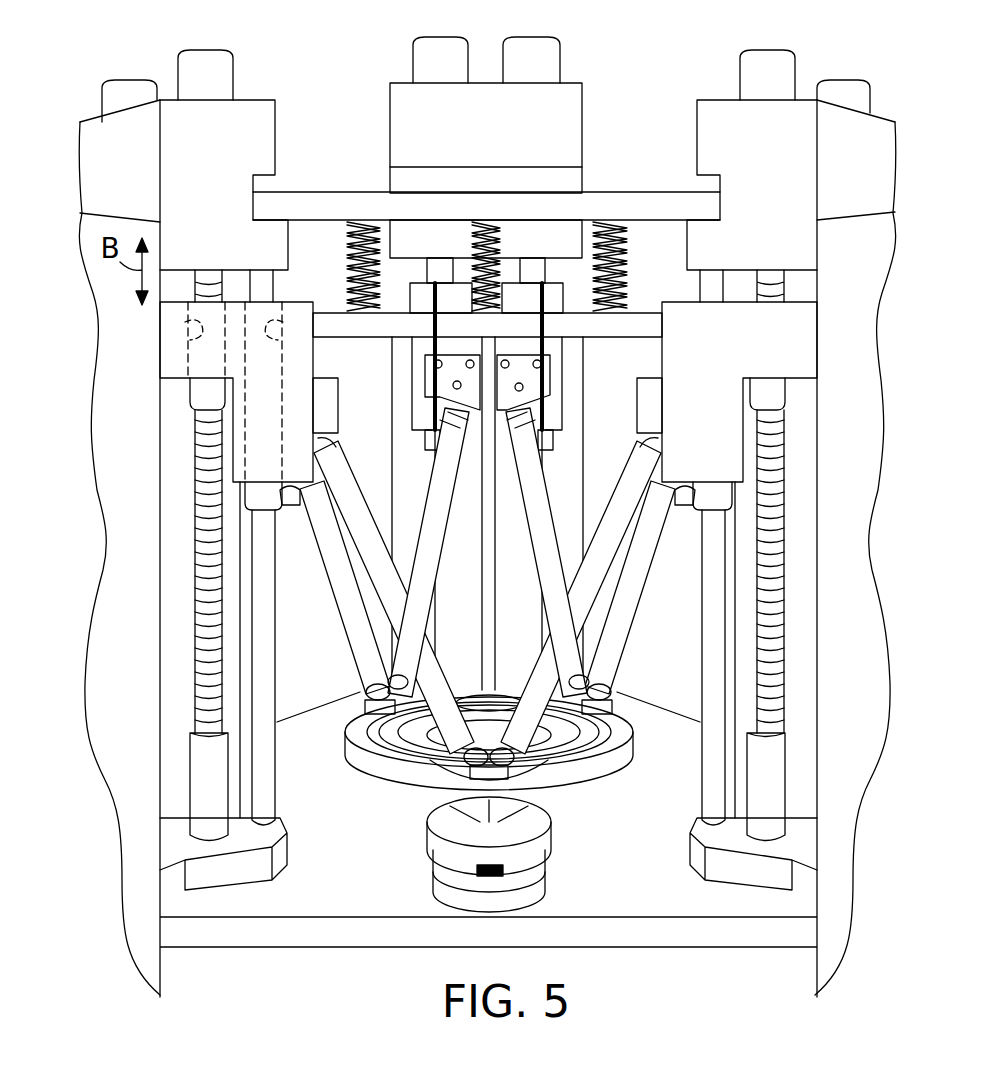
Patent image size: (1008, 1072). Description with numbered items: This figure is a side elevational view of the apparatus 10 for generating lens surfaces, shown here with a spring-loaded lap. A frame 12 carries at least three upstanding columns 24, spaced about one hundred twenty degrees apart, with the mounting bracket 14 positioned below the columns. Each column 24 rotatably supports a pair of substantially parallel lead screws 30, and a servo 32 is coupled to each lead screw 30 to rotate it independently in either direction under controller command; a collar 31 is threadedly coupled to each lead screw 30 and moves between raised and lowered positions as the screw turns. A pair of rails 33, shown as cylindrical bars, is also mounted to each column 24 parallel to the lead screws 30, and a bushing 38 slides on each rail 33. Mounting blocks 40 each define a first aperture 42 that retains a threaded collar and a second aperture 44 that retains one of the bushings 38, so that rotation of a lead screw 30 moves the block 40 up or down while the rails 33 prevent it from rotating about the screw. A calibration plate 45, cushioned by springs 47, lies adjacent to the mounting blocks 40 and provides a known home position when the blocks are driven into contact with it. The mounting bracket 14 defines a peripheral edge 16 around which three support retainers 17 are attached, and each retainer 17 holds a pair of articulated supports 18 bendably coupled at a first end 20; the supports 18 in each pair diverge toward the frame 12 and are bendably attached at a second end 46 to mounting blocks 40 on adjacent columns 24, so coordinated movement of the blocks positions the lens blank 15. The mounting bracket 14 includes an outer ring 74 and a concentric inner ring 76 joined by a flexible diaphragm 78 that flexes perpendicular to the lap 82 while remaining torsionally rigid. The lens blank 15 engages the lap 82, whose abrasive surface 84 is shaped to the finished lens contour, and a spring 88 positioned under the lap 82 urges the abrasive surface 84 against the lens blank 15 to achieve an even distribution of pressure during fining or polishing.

The apparatus for generating lens surfaces 10 is at (272, 55).
The frame 12 is at (120, 452).
The mounting bracket 14 is at (338, 770).
The lens blank 15 is at (430, 755).
The peripheral edge 16 is at (570, 782).
The support retainers 17 is at (348, 717).
The articulated supports 18 is at (412, 507).
The first end 20 is at (388, 676).
The upstanding columns 24 is at (390, 130).
The lead screws 30 is at (200, 556).
The collar 31 is at (192, 396).
The servo 32 is at (197, 78).
The rails 33 is at (437, 268).
The bushing 38 is at (285, 497).
The mounting blocks 40 is at (430, 378).
The first aperture 42 is at (195, 330).
The second aperture 44 is at (302, 306).
The calibration plate 45 is at (635, 320).
The second end 46 is at (505, 423).
The springs 47 is at (470, 237).
The outer ring 74 is at (612, 780).
The inner ring 76 is at (620, 762).
The flexible diaphragm 78 is at (470, 770).
The lap 82 is at (540, 867).
The abrasive surface 84 is at (446, 858).
The spring 88 is at (502, 875).